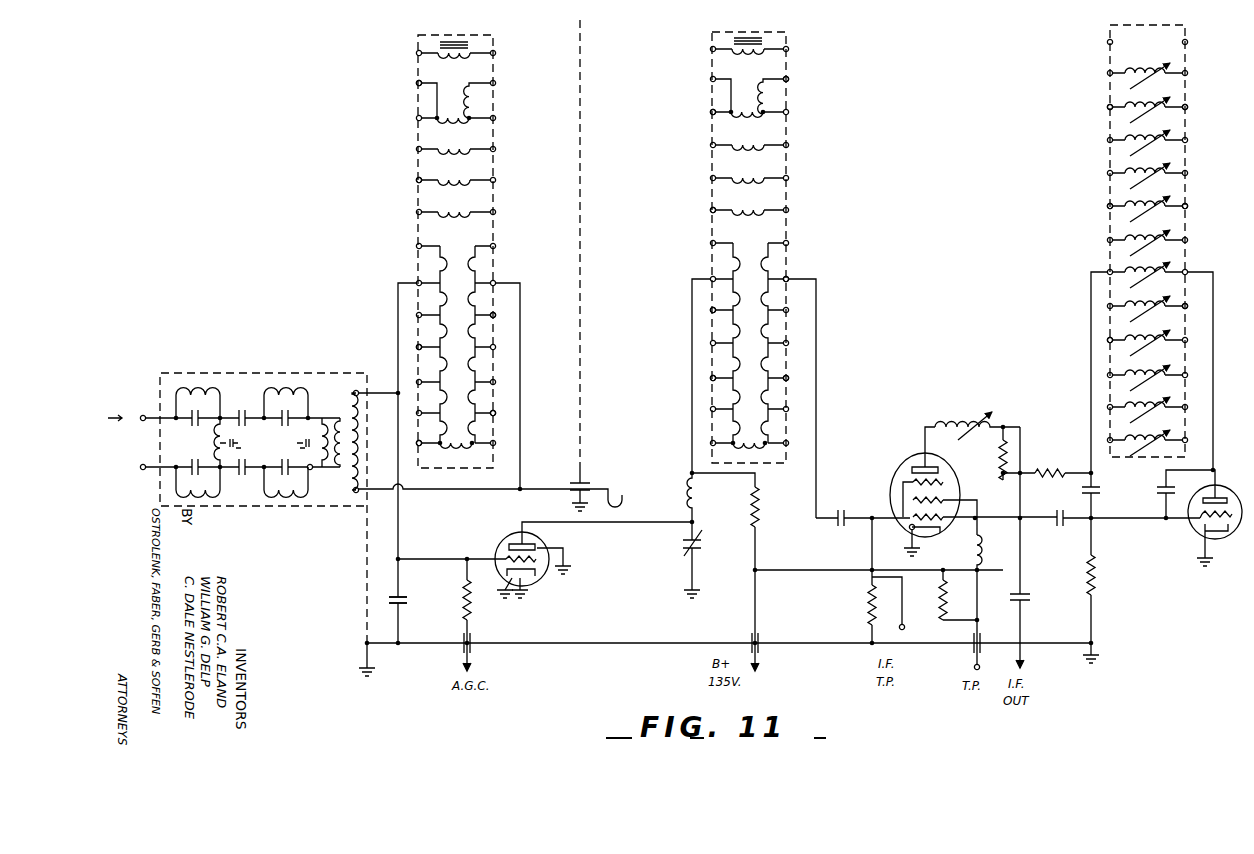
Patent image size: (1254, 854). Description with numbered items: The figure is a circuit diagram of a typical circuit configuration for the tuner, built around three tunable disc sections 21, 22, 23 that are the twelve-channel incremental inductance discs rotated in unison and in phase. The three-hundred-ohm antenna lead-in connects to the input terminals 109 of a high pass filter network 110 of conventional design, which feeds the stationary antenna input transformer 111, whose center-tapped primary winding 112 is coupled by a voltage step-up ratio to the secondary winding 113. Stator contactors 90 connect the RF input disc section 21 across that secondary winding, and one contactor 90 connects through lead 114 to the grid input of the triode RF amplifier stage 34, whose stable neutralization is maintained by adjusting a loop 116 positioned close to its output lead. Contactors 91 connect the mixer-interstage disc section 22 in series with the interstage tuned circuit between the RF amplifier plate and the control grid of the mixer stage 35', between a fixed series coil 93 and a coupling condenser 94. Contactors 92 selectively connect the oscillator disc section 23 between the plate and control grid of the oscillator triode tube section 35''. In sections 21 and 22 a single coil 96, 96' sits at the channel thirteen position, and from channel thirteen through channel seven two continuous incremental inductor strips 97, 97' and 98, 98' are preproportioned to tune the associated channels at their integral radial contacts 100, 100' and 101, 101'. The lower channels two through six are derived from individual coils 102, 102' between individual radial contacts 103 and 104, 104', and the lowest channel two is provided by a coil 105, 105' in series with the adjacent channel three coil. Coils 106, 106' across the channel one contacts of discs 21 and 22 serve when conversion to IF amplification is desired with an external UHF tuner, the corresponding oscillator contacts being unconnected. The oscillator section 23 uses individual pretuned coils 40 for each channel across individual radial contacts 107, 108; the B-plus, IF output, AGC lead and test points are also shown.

The RF input disc section 21 is at (468, 33).
The mixer-interstage disc section 22 is at (754, 30).
The oscillator disc section 23 is at (1148, 24).
The RF amplifier stage 34 is at (502, 538).
The mixer stage 35' is at (956, 516).
The oscillator triode tube section 35'' is at (1203, 513).
The oscillator coils 40 is at (1175, 405).
The stator contactors for RF disc section 90 is at (397, 286).
The stator contactors for interstage disc section 91 is at (691, 282).
The stator contactors for oscillator disc section 92 is at (1090, 278).
The fixed series coil 93 is at (686, 500).
The coupling condenser 94 is at (844, 512).
The single coil 96 is at (456, 428).
The single coil 96' is at (749, 430).
The continuous incremental inductor strip 97 is at (444, 344).
The continuous incremental inductor strip 97' is at (739, 343).
The continuous incremental inductor strip 98 is at (470, 344).
The continuous incremental inductor strip 98' is at (763, 343).
The integral radial contacts 100 is at (408, 406).
The integral radial contacts 100' is at (683, 344).
The integral radial contacts 101 is at (528, 357).
The integral radial contacts 101' is at (821, 319).
The individual coils 102 is at (456, 135).
The individual coils 102' is at (780, 163).
The individual radial contacts 103 is at (415, 84).
The individual radial contacts 104 is at (478, 195).
The individual radial contacts 104' is at (780, 125).
The channel two coil 105 is at (499, 100).
The channel two coil 105' is at (757, 87).
The channel one coil 106 is at (478, 34).
The channel one coil 106' is at (773, 31).
The individual radial contacts 107 is at (1106, 109).
The individual radial contacts 108 is at (1190, 108).
The input terminals 109 is at (143, 417).
The high pass filter network 110 is at (262, 511).
The antenna input transformer 111 is at (338, 462).
The center-tapped primary winding 112 is at (318, 430).
The secondary winding 113 is at (357, 450).
The lead 114 is at (402, 543).
The loop 116 is at (640, 500).